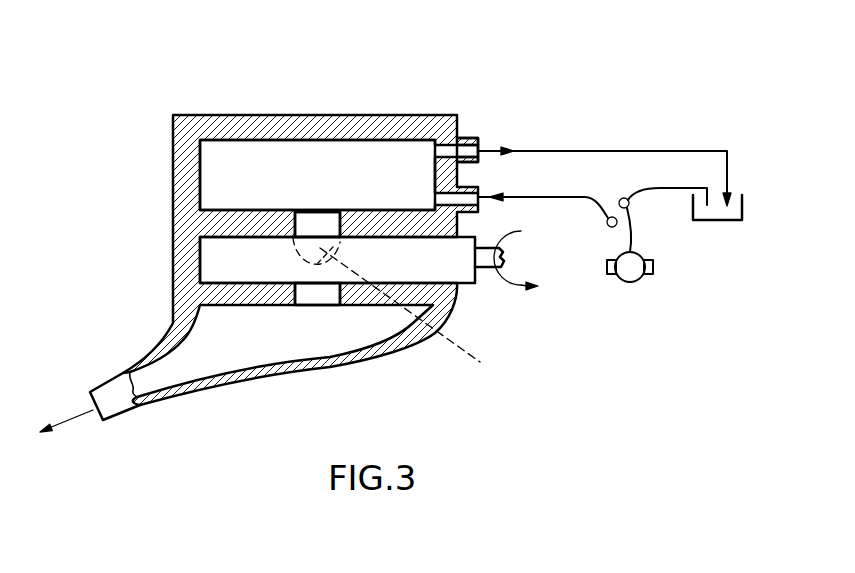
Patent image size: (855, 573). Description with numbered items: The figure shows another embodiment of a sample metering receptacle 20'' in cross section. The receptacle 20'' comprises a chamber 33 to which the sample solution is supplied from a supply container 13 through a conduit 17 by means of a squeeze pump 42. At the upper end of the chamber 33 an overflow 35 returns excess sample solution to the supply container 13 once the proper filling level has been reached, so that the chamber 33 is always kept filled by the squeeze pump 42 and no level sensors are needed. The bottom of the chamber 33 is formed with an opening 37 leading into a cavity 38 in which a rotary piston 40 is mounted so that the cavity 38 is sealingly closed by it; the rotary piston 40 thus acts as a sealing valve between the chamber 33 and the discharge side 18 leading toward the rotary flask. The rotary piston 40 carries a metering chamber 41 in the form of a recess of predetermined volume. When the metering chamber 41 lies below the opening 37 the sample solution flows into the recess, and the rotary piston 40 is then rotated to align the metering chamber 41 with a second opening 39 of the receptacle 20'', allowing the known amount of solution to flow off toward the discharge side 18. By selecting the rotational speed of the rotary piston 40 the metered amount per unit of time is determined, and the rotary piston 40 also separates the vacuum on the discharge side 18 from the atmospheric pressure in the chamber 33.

The sample metering receptacle 20'' is at (294, 213).
The chamber 33 is at (232, 157).
The opening 37 is at (315, 218).
The second opening 39 is at (315, 293).
The cavity 38 is at (236, 282).
The rotary piston 40 is at (458, 260).
The overflow 35 is at (462, 152).
The supply container 13 is at (743, 197).
The conduit 17 is at (585, 199).
The squeeze pump 42 is at (640, 226).
The metering chamber 41 is at (402, 310).
The discharge side 18 is at (80, 436).